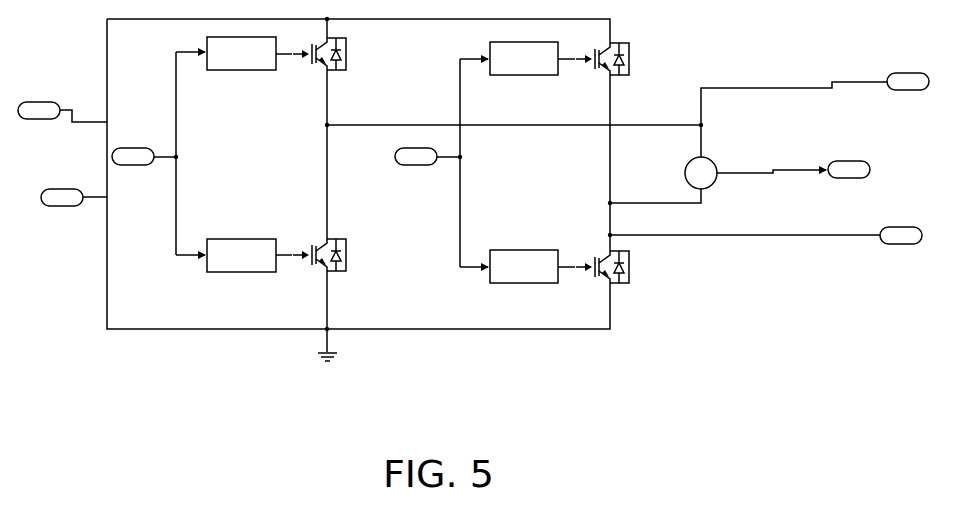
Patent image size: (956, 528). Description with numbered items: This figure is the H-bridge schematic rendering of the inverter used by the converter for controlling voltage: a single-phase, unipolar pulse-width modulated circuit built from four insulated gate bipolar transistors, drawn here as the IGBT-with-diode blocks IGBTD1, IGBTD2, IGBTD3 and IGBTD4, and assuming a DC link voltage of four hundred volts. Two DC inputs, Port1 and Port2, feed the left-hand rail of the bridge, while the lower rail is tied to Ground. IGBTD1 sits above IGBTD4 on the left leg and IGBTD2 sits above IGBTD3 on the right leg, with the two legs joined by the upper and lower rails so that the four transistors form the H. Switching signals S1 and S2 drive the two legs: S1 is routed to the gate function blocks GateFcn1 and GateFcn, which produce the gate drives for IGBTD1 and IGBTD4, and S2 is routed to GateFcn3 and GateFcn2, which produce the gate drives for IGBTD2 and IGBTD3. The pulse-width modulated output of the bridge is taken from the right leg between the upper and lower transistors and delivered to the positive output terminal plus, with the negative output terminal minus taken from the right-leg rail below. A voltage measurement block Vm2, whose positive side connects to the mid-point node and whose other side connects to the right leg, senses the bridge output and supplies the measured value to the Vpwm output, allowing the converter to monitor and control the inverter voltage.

The input port 1 Port1 is at (60, 123).
The input port 2 Port2 is at (70, 213).
The switching signal S1 is at (158, 153).
The switching signal S2 is at (441, 163).
The gate function block 1 GateFcn1 is at (245, 69).
The gate function block GateFcn is at (241, 272).
The gate function block 3 GateFcn3 is at (525, 74).
The gate function block 2 GateFcn2 is at (525, 283).
The IGBT with diode 1 IGBTD1 is at (359, 54).
The IGBT with diode 2 IGBTD2 is at (641, 59).
The IGBT with diode 3 IGBTD3 is at (641, 267).
The IGBT with diode 4 IGBTD4 is at (359, 255).
The voltage measurement Vm2 is at (663, 164).
The PWM voltage output Vpwm is at (799, 183).
The positive output terminal plus is at (815, 99).
The negative output terminal minus is at (766, 243).
The ground Ground is at (375, 350).